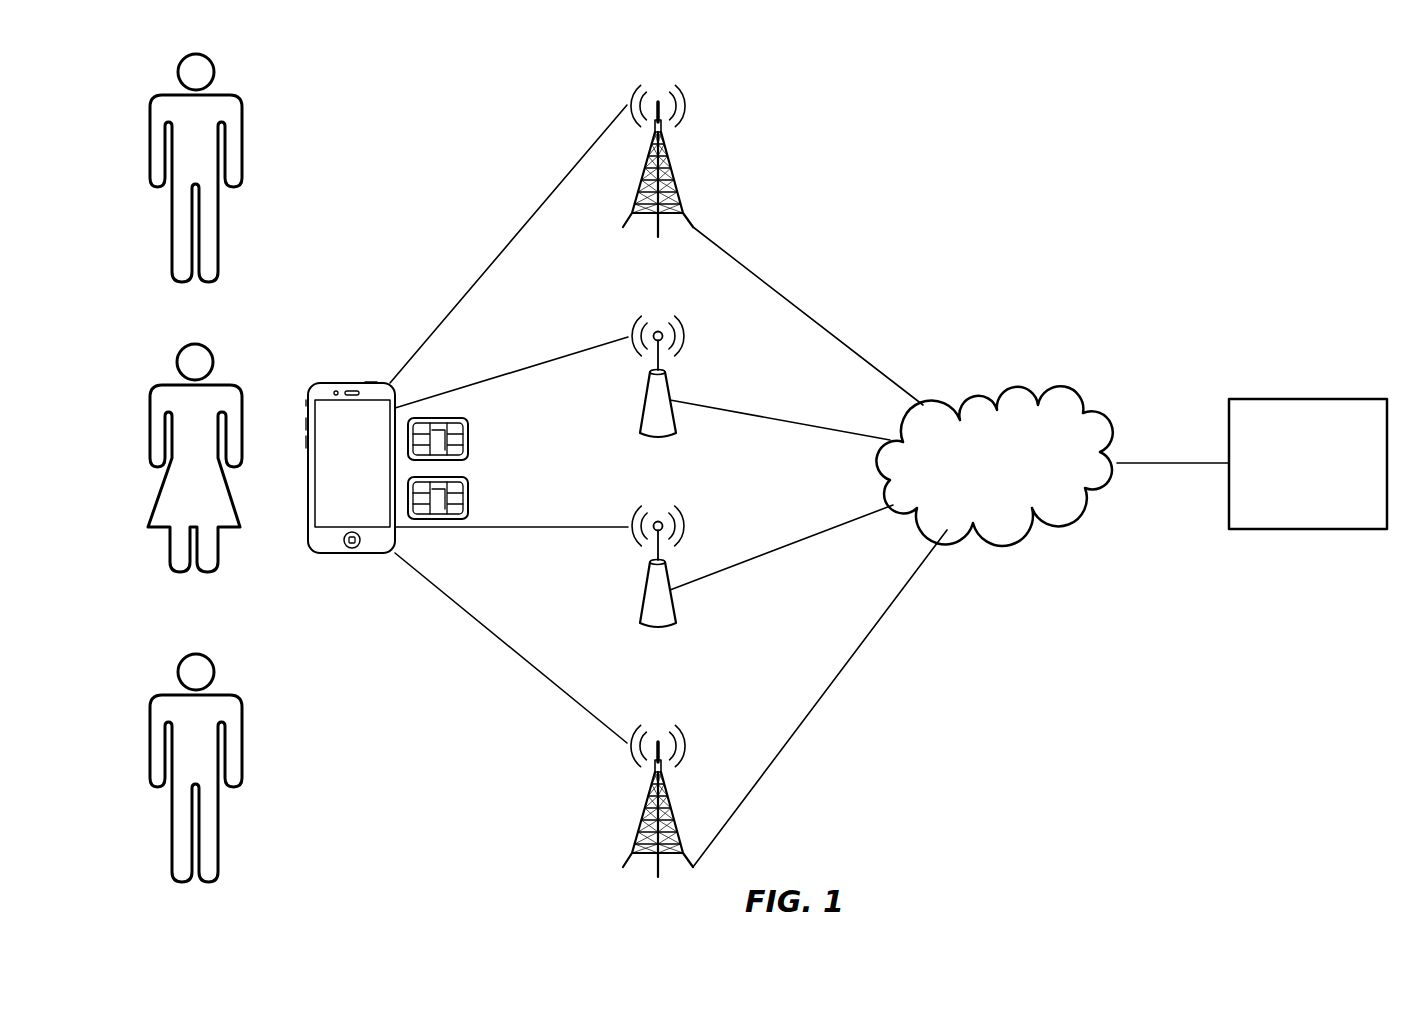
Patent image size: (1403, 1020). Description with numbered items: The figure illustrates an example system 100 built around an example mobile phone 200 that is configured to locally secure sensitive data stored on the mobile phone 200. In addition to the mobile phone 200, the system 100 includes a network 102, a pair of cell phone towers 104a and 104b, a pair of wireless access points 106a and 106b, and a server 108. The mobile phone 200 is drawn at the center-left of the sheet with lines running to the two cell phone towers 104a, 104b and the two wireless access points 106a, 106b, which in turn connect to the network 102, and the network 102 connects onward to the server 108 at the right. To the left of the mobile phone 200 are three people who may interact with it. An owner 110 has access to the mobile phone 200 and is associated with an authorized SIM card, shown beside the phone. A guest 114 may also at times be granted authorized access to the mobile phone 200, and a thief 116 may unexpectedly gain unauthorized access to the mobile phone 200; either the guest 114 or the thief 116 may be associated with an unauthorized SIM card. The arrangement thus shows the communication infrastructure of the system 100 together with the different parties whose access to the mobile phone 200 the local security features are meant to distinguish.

The system 100 is at (1290, 106).
The network 102 is at (982, 487).
The cell phone tower 104a is at (638, 202).
The cell phone tower 104b is at (638, 842).
The wireless access point 106a is at (644, 395).
The wireless access point 106b is at (644, 585).
The server 108 is at (1295, 489).
The owner 110 is at (162, 386).
The guest 114 is at (162, 696).
The thief 116 is at (162, 96).
The mobile phone 200 is at (337, 384).